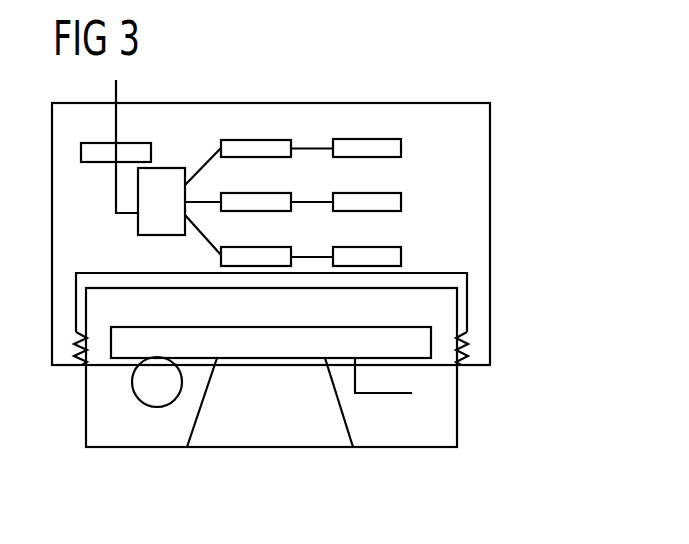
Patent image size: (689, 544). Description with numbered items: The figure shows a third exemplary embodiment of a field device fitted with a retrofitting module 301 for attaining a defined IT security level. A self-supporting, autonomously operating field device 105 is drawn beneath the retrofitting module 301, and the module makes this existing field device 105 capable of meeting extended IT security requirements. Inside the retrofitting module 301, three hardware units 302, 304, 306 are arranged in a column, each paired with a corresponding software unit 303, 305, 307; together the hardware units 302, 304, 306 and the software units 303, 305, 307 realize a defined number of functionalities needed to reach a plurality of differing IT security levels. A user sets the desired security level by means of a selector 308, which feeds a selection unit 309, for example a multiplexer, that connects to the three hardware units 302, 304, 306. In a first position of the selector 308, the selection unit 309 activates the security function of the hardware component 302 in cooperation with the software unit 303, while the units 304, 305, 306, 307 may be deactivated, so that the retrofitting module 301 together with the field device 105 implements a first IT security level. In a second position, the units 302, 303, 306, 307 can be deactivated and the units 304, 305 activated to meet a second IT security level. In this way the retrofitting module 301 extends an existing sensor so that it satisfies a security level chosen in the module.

The field device 105 is at (457, 419).
The retrofitting module 301 is at (490, 247).
The hardware unit 302 is at (291, 146).
The software unit 303 is at (401, 147).
The hardware unit 304 is at (291, 199).
The software unit 305 is at (401, 201).
The hardware unit 306 is at (291, 253).
The software unit 307 is at (401, 256).
The selector 308 is at (151, 152).
The selection unit 309 is at (137, 224).